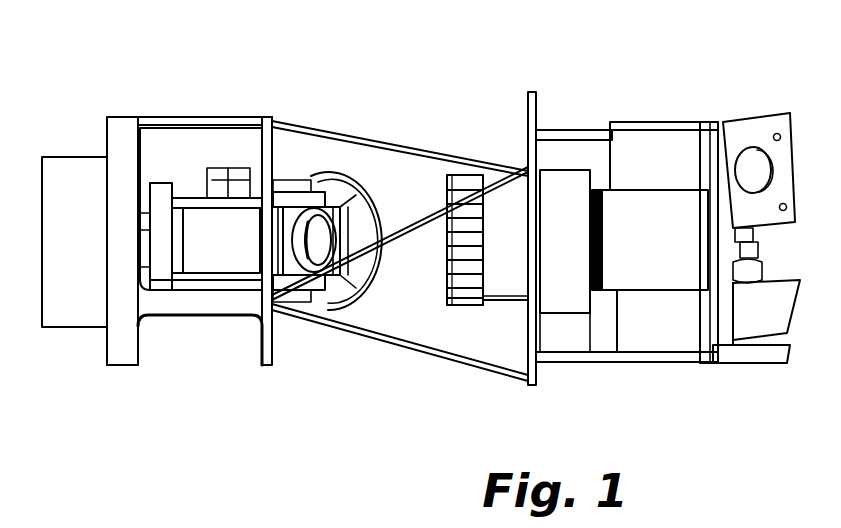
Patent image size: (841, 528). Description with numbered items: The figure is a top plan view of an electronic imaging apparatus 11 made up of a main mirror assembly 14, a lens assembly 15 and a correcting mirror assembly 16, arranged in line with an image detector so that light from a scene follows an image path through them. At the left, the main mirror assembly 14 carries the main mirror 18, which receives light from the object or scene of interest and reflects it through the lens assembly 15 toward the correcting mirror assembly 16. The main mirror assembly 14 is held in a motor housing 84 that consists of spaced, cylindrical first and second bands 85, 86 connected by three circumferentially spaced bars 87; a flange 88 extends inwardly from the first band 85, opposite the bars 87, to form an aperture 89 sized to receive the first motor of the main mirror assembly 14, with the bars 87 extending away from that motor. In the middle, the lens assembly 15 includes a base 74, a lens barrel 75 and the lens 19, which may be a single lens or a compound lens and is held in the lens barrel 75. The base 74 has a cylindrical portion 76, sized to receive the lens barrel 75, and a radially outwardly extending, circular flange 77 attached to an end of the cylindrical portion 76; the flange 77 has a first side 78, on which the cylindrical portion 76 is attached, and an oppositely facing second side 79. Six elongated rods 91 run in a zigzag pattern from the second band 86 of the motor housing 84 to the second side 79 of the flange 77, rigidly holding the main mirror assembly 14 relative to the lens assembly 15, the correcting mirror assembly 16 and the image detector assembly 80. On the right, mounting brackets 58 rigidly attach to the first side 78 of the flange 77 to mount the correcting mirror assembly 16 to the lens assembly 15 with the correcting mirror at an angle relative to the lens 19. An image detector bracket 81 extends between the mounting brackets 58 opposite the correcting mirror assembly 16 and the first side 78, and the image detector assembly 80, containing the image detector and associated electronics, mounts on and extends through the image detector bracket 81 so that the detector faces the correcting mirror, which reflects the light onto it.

The electronic imaging apparatus 11 is at (337, 47).
The main mirror assembly 14 is at (78, 322).
The lens assembly 15 is at (513, 293).
The correcting mirror assembly 16 is at (732, 362).
The main mirror 18 is at (380, 198).
The lens 19 is at (447, 273).
The mounting brackets 58 is at (598, 348).
The base 74 is at (563, 307).
The lens barrel 75 is at (490, 273).
The cylindrical portion 76 is at (577, 180).
The flange 77 is at (533, 92).
The first side 78 is at (537, 112).
The second side 79 is at (528, 102).
The image detector assembly 80 is at (660, 207).
The image detector bracket 81 is at (650, 347).
The motor housing 84 is at (143, 305).
The first band 85 is at (117, 360).
The second band 86 is at (265, 362).
The bars 87 is at (188, 310).
The flange 88 is at (108, 138).
The aperture 89 is at (107, 153).
The elongated rods 91 is at (387, 338).